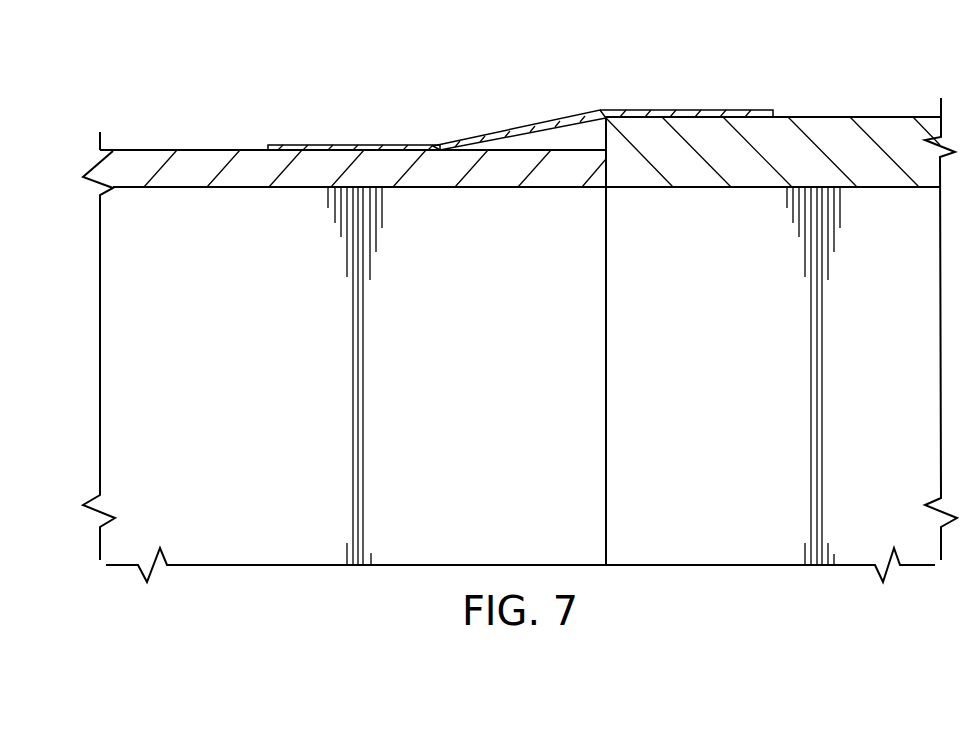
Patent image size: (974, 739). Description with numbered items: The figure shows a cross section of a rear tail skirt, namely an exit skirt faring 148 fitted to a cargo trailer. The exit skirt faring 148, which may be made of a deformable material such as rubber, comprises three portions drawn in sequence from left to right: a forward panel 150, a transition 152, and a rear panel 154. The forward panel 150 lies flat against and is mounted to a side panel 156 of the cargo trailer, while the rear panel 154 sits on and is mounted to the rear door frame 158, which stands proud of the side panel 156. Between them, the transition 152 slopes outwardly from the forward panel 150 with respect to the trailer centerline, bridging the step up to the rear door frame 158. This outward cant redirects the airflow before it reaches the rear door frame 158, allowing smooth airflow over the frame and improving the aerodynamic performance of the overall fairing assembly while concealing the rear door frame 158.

The exit skirt faring 148 is at (457, 79).
The forward panel 150 is at (323, 142).
The transition 152 is at (525, 120).
The rear panel 154 is at (686, 110).
The side panel 156 is at (203, 157).
The rear door frame 158 is at (885, 122).